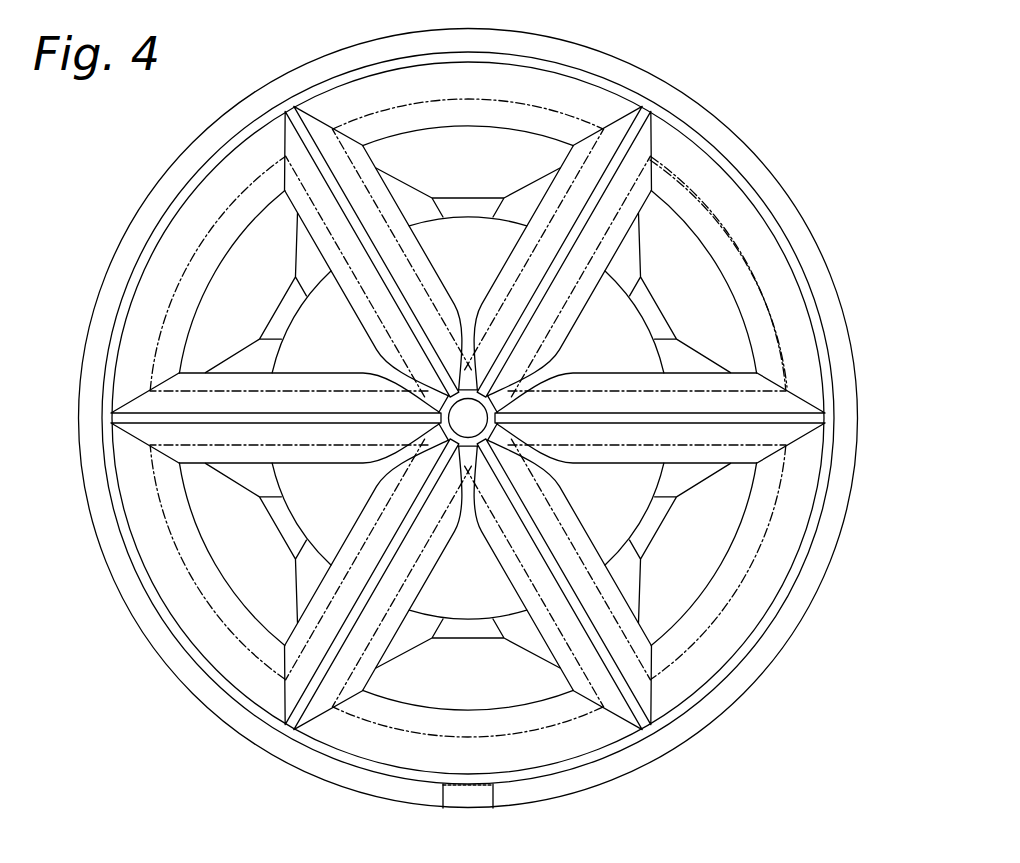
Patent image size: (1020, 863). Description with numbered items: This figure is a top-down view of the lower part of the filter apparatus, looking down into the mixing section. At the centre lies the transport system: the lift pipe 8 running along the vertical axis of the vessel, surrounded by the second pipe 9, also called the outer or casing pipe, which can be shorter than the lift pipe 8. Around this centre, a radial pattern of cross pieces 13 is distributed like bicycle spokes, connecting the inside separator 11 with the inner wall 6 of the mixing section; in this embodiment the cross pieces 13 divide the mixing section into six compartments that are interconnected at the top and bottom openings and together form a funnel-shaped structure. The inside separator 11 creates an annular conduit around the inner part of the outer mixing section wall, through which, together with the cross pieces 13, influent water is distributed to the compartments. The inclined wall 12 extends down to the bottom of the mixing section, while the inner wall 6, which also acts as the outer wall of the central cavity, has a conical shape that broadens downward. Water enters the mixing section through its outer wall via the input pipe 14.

The inner wall 6 is at (627, 485).
The lift pipe 8 is at (466, 421).
The second pipe 9 is at (467, 443).
The inside separator 11 is at (743, 230).
The inclined wall 12 is at (665, 262).
The cross pieces 13 is at (778, 408).
The input pipe 14 is at (468, 797).